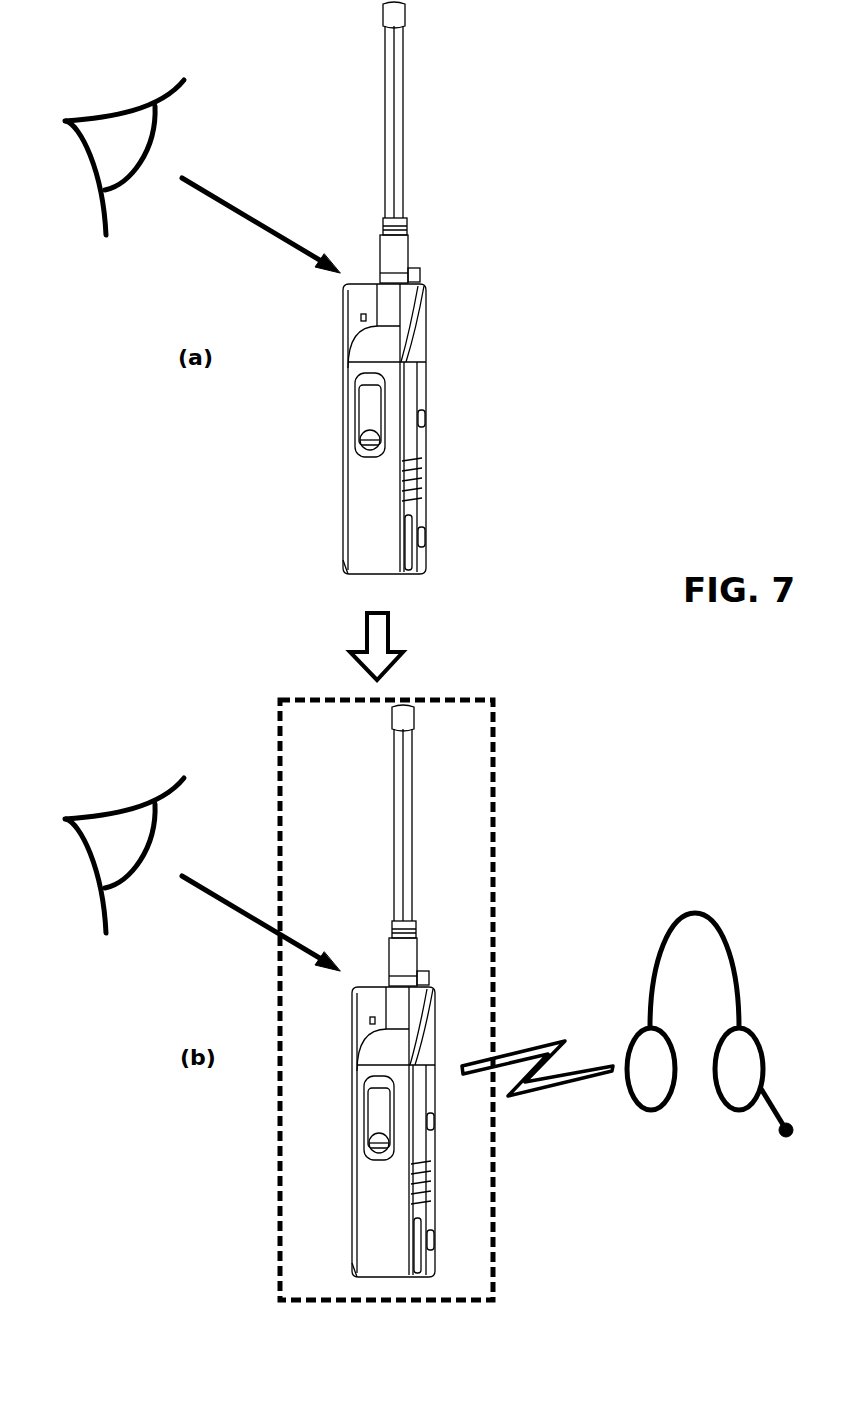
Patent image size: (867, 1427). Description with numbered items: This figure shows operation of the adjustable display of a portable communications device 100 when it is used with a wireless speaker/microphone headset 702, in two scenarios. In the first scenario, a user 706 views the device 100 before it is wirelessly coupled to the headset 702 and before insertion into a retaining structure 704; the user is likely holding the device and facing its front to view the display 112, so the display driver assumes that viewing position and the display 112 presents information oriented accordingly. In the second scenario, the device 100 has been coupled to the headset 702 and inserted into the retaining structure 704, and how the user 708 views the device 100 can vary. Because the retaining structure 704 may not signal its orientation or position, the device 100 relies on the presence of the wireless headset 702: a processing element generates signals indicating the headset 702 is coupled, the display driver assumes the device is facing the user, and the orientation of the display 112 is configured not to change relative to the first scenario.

The portable communications device 100 is at (296, 526).
The display 112 is at (358, 275).
The speaker/microphone headset 702 is at (705, 913).
The retaining structure 704 is at (495, 768).
The user 706 is at (107, 112).
The user 708 is at (107, 808).